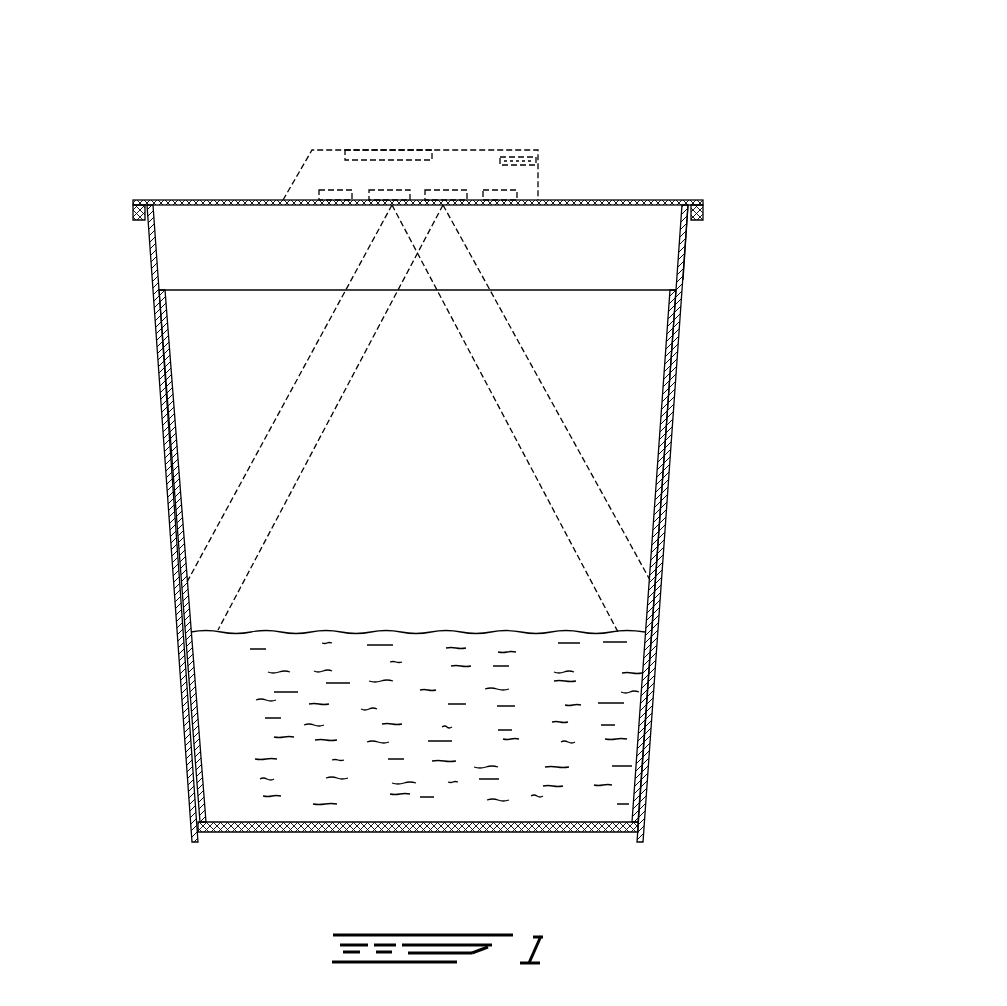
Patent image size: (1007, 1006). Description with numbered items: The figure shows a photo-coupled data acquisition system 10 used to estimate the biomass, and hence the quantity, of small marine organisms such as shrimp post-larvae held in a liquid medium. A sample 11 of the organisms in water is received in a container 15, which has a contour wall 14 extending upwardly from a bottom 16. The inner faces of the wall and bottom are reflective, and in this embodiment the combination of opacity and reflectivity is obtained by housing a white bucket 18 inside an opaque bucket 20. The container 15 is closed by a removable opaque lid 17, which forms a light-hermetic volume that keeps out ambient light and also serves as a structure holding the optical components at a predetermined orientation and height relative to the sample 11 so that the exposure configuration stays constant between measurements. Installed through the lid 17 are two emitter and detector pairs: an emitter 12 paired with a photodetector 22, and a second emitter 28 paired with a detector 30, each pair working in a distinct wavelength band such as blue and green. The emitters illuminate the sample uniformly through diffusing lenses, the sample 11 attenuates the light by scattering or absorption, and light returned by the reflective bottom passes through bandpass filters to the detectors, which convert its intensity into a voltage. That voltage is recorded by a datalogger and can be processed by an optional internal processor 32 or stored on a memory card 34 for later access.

The photo-coupled data acquisition system 10 is at (716, 128).
The sample 11 is at (565, 712).
The emitter 12 is at (385, 190).
The contour wall 14 is at (170, 512).
The container 15 is at (665, 551).
The bottom 16 is at (333, 833).
The lid 17 is at (610, 198).
The white bucket 18 is at (665, 380).
The opaque bucket 20 is at (688, 243).
The photodetector 22 is at (335, 190).
The emitter 28 is at (440, 190).
The detector 30 is at (495, 190).
The internal processor 32 is at (390, 150).
The memory card 34 is at (530, 158).